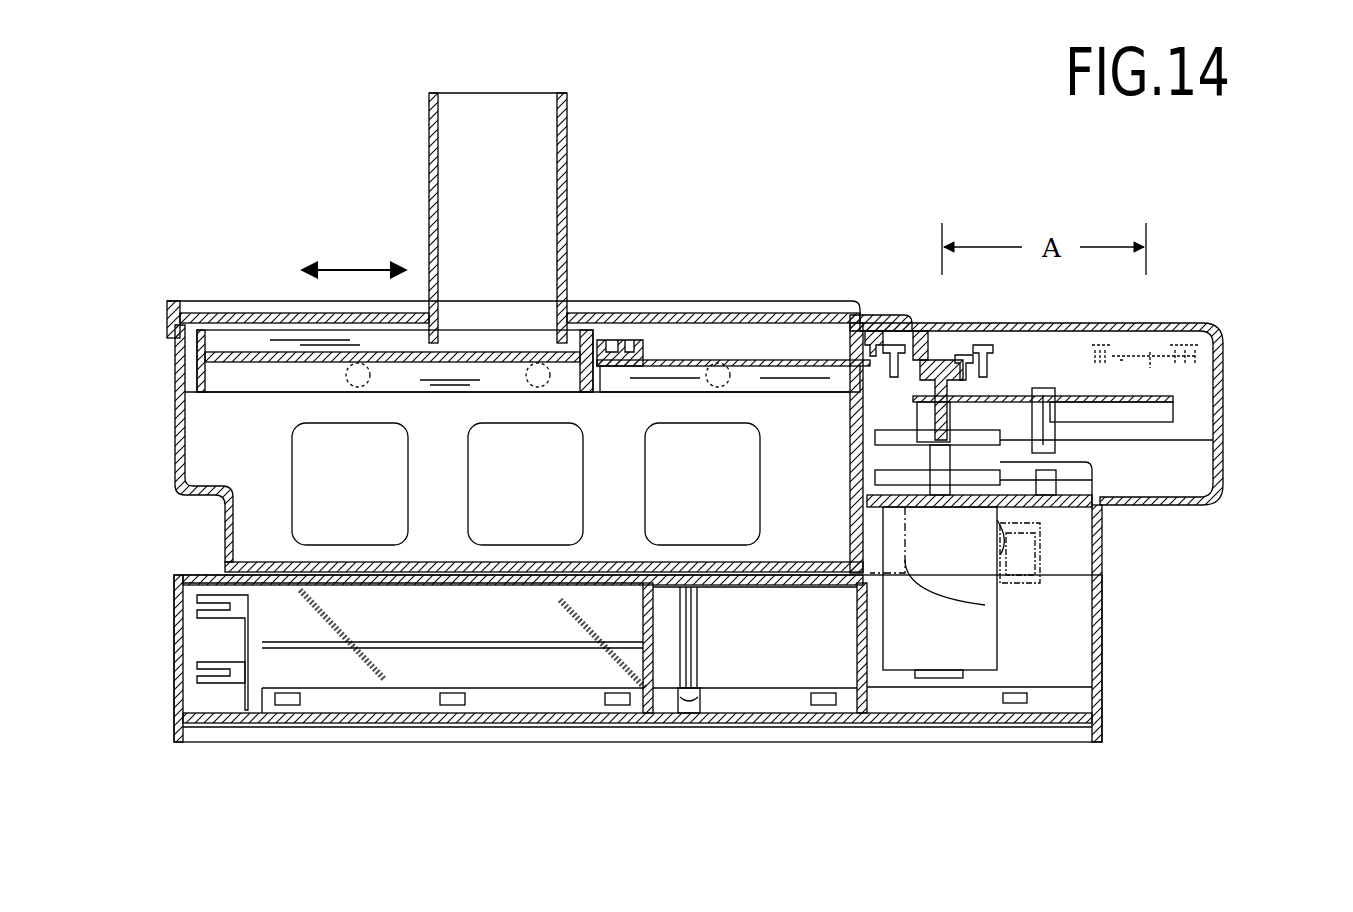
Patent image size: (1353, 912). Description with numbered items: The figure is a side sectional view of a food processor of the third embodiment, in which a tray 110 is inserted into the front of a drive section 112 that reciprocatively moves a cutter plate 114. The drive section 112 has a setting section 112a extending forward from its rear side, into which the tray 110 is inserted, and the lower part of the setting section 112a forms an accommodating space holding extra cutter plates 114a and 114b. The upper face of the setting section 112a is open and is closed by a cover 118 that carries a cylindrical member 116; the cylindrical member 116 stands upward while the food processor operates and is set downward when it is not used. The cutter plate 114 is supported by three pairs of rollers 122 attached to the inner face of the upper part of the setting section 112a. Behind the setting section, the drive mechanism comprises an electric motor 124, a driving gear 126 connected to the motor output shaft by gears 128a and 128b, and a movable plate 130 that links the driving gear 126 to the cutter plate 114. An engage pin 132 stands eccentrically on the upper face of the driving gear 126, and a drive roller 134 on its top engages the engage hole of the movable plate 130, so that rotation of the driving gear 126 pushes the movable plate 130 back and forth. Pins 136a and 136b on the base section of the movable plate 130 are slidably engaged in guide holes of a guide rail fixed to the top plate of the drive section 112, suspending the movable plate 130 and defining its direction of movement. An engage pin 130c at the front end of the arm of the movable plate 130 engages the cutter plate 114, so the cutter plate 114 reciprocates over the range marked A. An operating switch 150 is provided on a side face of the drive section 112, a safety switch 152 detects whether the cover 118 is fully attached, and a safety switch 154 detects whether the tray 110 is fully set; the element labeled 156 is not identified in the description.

The tray 110 is at (165, 483).
The drive section 112 is at (1112, 712).
The setting section 112a is at (405, 583).
The cutter plate 114 is at (263, 345).
The extra cutter plate 114a is at (210, 600).
The extra cutter plate 114b is at (225, 673).
The cylindrical member 116 is at (567, 113).
The cover 118 is at (690, 312).
The rollers 122 is at (360, 375).
The electric motor 124 is at (985, 655).
The driving gear 126 is at (1173, 410).
The gear 128a is at (1100, 517).
The gear 128b is at (1213, 440).
The movable plate 130 is at (757, 360).
The engage pin 130c is at (618, 340).
The engage pin 132 is at (935, 325).
The drive roller 134 is at (965, 325).
The pin 136a is at (882, 325).
The pin 136b is at (1005, 325).
The operating switch 150 is at (1040, 548).
The safety switch 152 is at (878, 325).
The safety switch 154 is at (990, 600).
The support post 156 is at (757, 675).